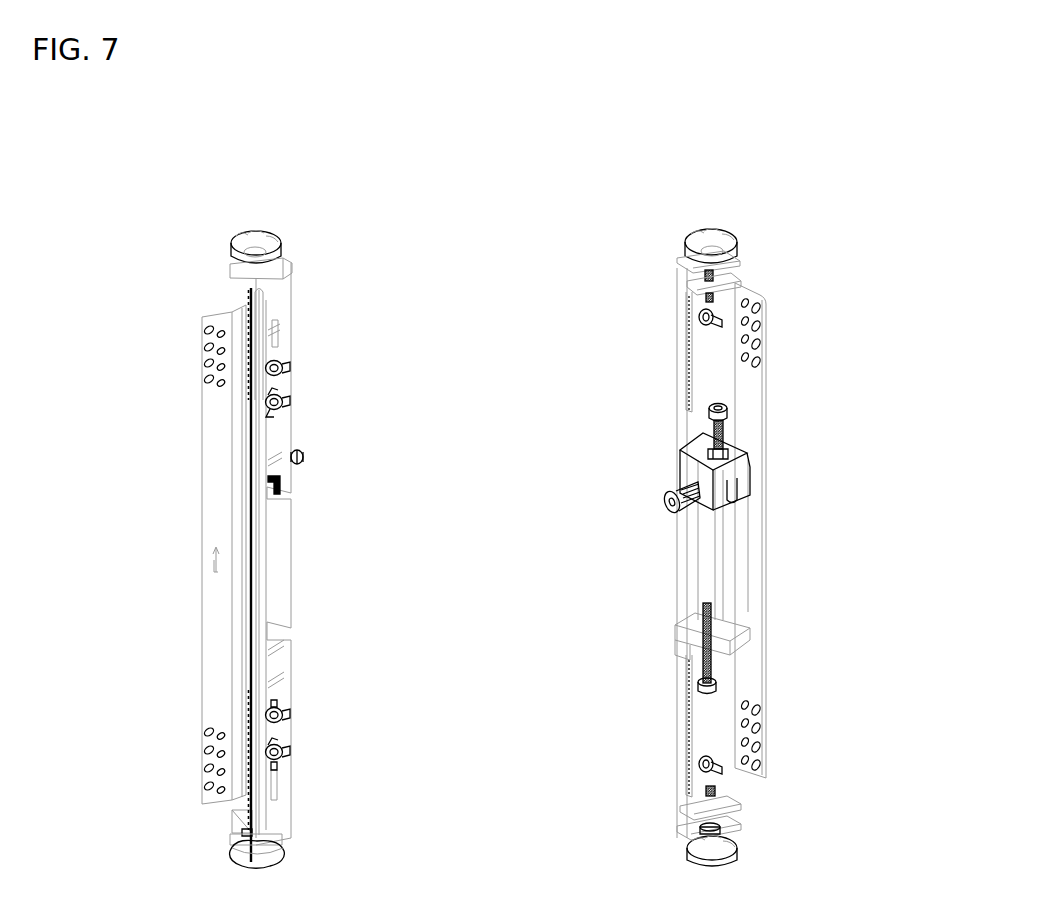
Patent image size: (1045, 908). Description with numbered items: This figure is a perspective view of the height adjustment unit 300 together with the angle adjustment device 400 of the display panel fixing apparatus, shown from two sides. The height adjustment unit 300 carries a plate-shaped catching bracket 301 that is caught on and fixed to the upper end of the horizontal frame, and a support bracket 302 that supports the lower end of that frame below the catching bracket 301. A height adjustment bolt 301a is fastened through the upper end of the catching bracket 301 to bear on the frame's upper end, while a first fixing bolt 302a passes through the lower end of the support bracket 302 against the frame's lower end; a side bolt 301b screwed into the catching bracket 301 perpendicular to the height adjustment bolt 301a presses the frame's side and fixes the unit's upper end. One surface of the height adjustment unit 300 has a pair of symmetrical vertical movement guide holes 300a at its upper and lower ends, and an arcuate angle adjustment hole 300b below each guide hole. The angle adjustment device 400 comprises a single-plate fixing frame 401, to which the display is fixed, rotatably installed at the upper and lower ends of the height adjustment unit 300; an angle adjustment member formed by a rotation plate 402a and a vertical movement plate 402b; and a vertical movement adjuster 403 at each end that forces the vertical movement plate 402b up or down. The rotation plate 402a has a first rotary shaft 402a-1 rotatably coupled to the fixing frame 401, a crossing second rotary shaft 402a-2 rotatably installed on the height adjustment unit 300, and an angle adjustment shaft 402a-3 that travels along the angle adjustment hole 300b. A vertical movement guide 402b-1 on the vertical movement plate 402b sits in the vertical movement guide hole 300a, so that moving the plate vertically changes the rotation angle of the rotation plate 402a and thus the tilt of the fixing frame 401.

The height adjustment unit 300 is at (483, 565).
The vertical movement guide hole 300a is at (322, 300).
The angle adjustment hole 300b is at (329, 562).
The catching bracket 301 is at (556, 500).
The height adjustment bolt 301a is at (824, 432).
The side bolt 301b is at (495, 482).
The support bracket 302 is at (342, 653).
The first fixing bolt 302a is at (647, 648).
The angle adjustment device 400 is at (483, 553).
The fixing frame 401 is at (514, 539).
The rotation plate 402a is at (622, 544).
The first rotary shaft 402a-1 is at (617, 541).
The second rotary shaft 402a-2 is at (351, 577).
The angle adjustment shaft 402a-3 is at (351, 537).
The vertical movement plate 402b is at (413, 545).
The vertical movement guide 402b-1 is at (325, 308).
The vertical movement adjuster 403 is at (484, 193).